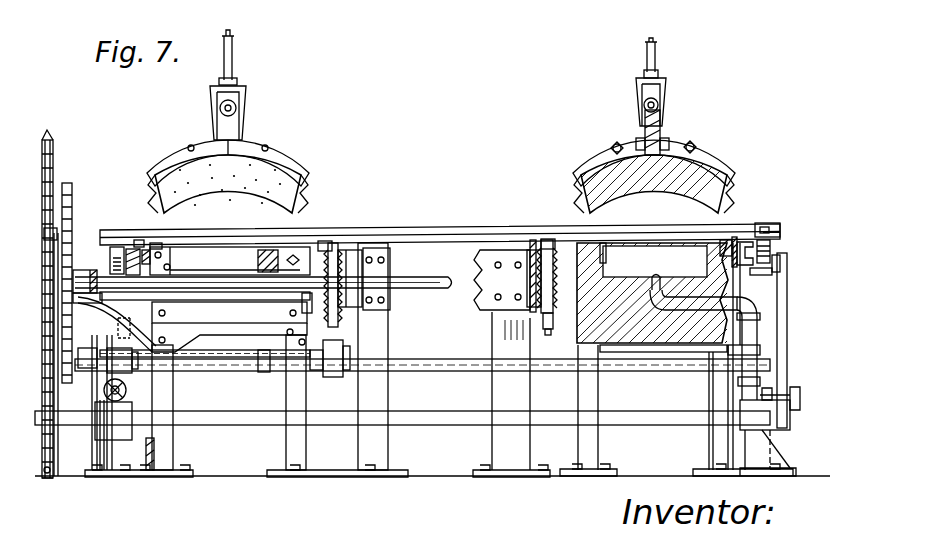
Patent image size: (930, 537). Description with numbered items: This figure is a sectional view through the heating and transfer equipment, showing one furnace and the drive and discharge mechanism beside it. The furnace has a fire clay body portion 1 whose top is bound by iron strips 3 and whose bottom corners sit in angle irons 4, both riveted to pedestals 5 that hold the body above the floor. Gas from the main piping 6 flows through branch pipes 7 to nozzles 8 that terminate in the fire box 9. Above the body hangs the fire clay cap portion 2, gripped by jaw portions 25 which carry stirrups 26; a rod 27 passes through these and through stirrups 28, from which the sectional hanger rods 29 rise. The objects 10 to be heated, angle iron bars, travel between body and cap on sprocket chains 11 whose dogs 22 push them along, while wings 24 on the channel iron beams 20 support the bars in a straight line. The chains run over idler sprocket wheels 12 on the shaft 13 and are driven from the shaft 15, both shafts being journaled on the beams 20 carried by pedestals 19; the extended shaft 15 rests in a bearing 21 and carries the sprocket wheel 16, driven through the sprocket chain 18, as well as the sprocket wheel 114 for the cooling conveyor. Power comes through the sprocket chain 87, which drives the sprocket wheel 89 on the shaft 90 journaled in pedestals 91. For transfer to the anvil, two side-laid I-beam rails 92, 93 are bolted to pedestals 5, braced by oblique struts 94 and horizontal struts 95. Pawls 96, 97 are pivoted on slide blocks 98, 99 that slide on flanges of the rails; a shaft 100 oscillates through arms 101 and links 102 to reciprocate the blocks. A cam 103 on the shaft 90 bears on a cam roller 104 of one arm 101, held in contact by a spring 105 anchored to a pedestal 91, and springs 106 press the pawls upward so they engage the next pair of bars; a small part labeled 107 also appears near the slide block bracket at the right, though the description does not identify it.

The body portion 1 is at (670, 332).
The cap portion 2 is at (272, 185).
The iron strips 3 is at (560, 240).
The angle irons 4 is at (246, 358).
The pedestals 5 is at (226, 459).
The main piping 6 is at (440, 366).
The branch pipes 7 is at (760, 332).
The nozzles 8 is at (648, 268).
The fire box 9 is at (608, 250).
The objects 10 is at (455, 226).
The sprocket chains 11 is at (308, 313).
The idler sprocket wheels 12 is at (528, 302).
The shaft 13 is at (246, 258).
The shaft 15 is at (419, 277).
The sprocket wheel 16 is at (66, 185).
The sprocket chain 18 is at (73, 204).
The pedestals 19 is at (386, 394).
The channel iron beams 20 is at (350, 250).
The bearing 21 is at (86, 298).
The dogs 22 is at (336, 242).
The wings 24 is at (320, 242).
The jaw portions 25 is at (252, 142).
The stirrups 26 is at (660, 120).
The rod 27 is at (212, 104).
The stirrups 28 is at (244, 90).
The hanger rods 29 is at (234, 54).
The sprocket chain 87 is at (47, 131).
The sprocket wheel 89 is at (48, 479).
The shaft 90 is at (268, 373).
The pedestals 91 is at (127, 386).
The rail 92 is at (158, 244).
The rail 93 is at (720, 246).
The oblique struts 94 is at (155, 462).
The horizontal struts 95 is at (229, 326).
The pawl 96 is at (117, 247).
The pawl 97 is at (781, 230).
The slide block 98 is at (152, 243).
The slide block 99 is at (745, 245).
The shaft 100 is at (448, 426).
The arms 101 is at (787, 322).
The links 102 is at (110, 260).
The cam 103 is at (105, 402).
The cam roller 104 is at (88, 368).
The spring 105 is at (125, 403).
The springs 106 is at (772, 257).
The plate 107 is at (766, 272).
The sprocket wheel 114 is at (138, 240).